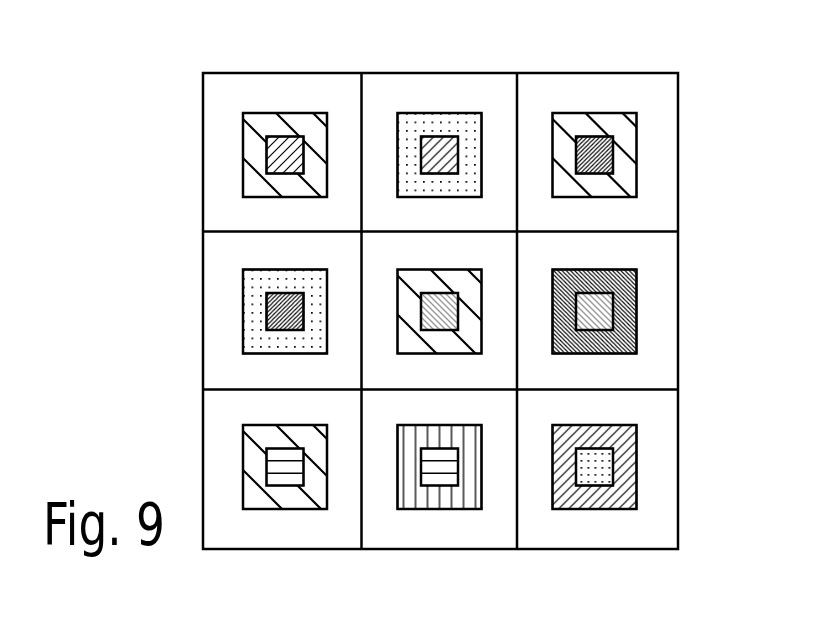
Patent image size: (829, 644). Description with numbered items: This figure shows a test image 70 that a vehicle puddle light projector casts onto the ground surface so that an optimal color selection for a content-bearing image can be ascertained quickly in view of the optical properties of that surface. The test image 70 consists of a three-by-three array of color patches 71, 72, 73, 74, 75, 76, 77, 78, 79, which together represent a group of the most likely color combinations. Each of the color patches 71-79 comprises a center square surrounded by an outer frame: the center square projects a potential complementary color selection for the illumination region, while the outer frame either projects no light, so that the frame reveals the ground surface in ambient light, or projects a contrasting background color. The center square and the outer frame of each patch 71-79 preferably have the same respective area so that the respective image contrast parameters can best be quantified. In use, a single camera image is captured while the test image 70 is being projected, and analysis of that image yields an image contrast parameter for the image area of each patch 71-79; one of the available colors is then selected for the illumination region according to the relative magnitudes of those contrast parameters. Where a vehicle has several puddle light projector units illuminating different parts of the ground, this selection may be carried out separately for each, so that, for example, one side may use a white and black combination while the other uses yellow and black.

The test image 70 is at (679, 100).
The color patch 71 is at (262, 111).
The color patch 72 is at (421, 111).
The color patch 73 is at (604, 111).
The color patch 74 is at (240, 334).
The color patch 75 is at (476, 267).
The color patch 76 is at (641, 325).
The color patch 77 is at (262, 511).
The color patch 78 is at (464, 511).
The color patch 79 is at (617, 510).